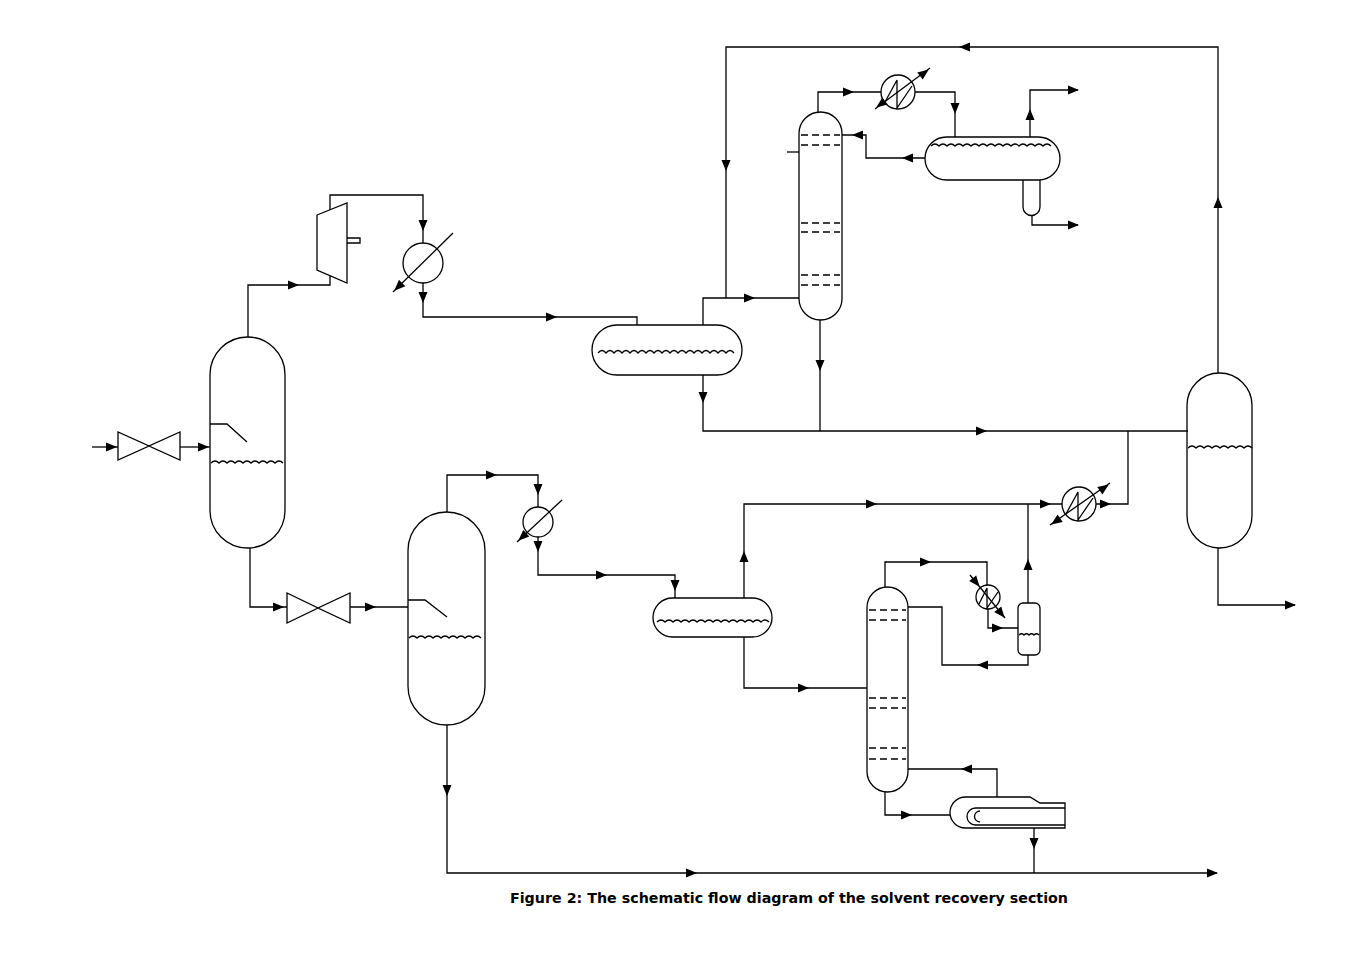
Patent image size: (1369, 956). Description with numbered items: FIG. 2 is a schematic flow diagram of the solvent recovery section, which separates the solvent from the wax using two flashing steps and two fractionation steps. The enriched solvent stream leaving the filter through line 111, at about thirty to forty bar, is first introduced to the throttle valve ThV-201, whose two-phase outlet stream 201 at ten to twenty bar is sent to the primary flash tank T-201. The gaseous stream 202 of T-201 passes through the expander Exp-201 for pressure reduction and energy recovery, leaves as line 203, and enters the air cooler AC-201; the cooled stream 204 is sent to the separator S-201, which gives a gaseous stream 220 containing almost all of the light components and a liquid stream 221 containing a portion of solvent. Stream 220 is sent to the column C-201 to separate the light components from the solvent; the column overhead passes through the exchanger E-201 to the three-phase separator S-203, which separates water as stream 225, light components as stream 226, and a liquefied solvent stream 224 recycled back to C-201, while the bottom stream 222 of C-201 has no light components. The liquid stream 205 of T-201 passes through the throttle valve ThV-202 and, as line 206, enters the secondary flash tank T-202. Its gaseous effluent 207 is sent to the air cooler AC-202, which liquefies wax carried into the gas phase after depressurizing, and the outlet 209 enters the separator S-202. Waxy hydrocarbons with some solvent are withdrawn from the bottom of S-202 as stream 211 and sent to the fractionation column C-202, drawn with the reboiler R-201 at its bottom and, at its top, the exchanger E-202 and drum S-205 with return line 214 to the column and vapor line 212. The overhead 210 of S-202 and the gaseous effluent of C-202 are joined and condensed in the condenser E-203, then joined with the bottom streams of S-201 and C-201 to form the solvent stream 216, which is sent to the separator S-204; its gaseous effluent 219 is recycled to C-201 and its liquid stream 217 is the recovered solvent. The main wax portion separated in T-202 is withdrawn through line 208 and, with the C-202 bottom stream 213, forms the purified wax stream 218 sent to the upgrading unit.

The enriched solvent stream line 111 is at (87, 448).
The throttle valve ThV-201 is at (148, 458).
The outlet stream 201 is at (195, 438).
The primary flash tank T-201 is at (298, 442).
The gaseous stream of T-201 202 is at (289, 306).
The expander Exp-201 is at (290, 243).
The expander outlet stream 203 is at (379, 209).
The air cooler AC-201 is at (458, 263).
The cooled stream 204 is at (528, 304).
The separator S-201 is at (667, 375).
The gaseous stream of S-201 220 is at (741, 310).
The recycle stream 219 is at (960, 208).
The liquid stream of S-201 221 is at (760, 403).
The fractionation column C-201 is at (864, 216).
The overhead condenser E-201 is at (889, 101).
The three-phase separator S-203 is at (992, 190).
The liquefied solvent stream 224 is at (883, 155).
The water stream 225 is at (1071, 223).
The light components stream 226 is at (1069, 112).
The bottom stream of C-201 222 is at (837, 375).
The solvent stream 216 is at (1004, 423).
The separator S-204 is at (1264, 460).
The recovered solvent stream 217 is at (1277, 588).
The condenser E-203 is at (1088, 486).
The vapor stream from S-202 210 is at (901, 549).
The vapor stream from S-205 212 is at (1044, 553).
The reflux drum S-205 is at (1060, 629).
The reflux stream to C-202 214 is at (1008, 651).
The overhead condenser E-202 is at (951, 595).
The separator S-202 is at (712, 644).
The cooled stream to S-202 209 is at (607, 569).
The bottom stream of S-202 211 is at (805, 665).
The fractionation column C-202 is at (938, 689).
The reboiler R-201 is at (993, 790).
The bottom stream of C-202 213 is at (1022, 850).
The wax line 208 is at (739, 801).
The purified wax stream 218 is at (1173, 866).
The liquid stream of T-201 205 is at (269, 580).
The throttle valve ThV-202 is at (318, 619).
The stream to secondary flash tank 206 is at (379, 600).
The secondary flash tank T-202 is at (494, 618).
The gaseous effluent of T-202 207 is at (495, 492).
The air cooler AC-202 is at (576, 521).